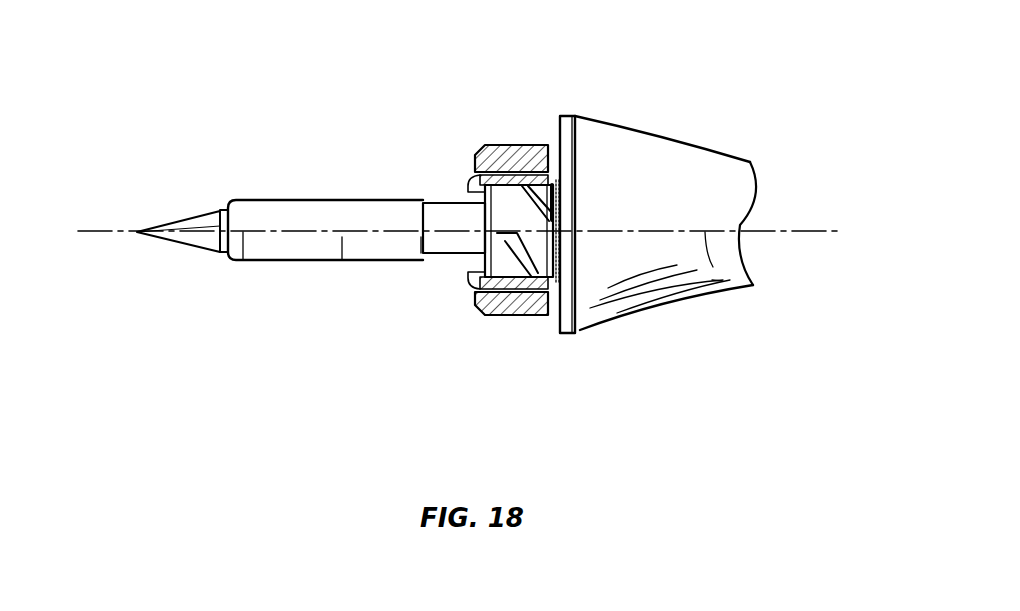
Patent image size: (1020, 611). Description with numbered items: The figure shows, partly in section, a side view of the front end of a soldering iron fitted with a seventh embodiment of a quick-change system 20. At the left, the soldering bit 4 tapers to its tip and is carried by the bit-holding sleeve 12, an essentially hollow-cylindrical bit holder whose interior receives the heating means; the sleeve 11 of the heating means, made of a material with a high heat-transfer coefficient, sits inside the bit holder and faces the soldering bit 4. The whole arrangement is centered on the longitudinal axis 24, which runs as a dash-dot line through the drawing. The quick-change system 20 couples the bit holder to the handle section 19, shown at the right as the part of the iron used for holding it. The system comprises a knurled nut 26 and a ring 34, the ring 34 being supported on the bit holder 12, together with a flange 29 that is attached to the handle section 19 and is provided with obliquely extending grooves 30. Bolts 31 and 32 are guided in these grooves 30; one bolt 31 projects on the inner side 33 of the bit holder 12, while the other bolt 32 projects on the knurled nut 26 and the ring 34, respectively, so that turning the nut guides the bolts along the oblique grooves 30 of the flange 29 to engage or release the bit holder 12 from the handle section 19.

The soldering bit 4 is at (193, 238).
The sleeve 11 is at (317, 248).
The bit-holding sleeve 12 is at (306, 210).
The handle section 19 is at (668, 167).
The quick-change system 20 is at (502, 126).
The longitudinal axis 24 is at (722, 297).
The knurled nut 26 is at (487, 147).
The flange 29 is at (574, 275).
The obliquely extending grooves 30 is at (478, 281).
The bolt 31 is at (526, 188).
The bolt 32 is at (537, 316).
The inner side 33 is at (448, 210).
The ring 34 is at (511, 303).